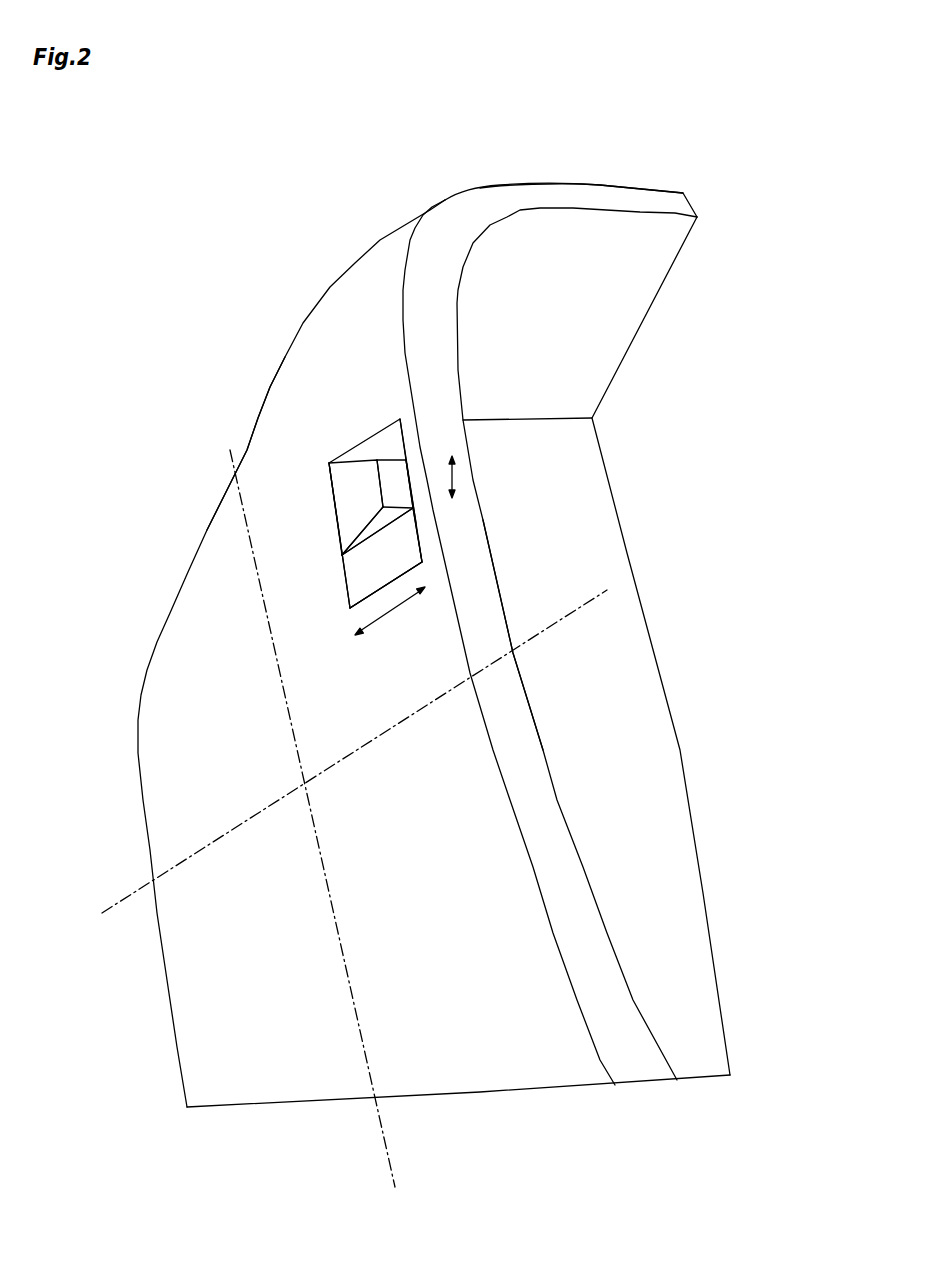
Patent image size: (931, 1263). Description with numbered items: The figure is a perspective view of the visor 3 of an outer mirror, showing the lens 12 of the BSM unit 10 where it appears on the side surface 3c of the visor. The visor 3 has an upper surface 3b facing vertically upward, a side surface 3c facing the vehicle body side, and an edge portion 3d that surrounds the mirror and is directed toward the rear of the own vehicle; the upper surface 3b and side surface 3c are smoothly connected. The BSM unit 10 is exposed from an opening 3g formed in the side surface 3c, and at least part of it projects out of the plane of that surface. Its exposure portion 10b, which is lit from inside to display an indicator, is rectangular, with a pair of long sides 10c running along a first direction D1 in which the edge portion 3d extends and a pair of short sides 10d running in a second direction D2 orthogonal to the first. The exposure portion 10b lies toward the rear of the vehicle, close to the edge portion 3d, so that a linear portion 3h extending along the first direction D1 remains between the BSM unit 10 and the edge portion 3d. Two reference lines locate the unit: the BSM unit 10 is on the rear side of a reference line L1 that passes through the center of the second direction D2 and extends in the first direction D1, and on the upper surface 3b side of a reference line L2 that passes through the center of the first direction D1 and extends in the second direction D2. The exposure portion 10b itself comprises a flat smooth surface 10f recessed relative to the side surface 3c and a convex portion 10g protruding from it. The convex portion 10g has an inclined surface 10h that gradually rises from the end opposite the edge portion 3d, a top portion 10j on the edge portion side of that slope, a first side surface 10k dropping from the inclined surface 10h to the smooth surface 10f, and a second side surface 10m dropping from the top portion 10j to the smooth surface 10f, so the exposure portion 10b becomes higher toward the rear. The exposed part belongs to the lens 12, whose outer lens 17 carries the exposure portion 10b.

The visor 3 is at (450, 194).
The upper surface 3b is at (633, 188).
The side surface 3c is at (263, 440).
The edge portion 3d is at (483, 583).
The opening 3g is at (330, 466).
The linear portion 3h is at (420, 467).
The BSM unit 10 is at (363, 432).
The exposure portion 10b is at (393, 458).
The long sides 10c is at (351, 605).
The short sides 10d is at (377, 460).
The smooth surface 10f is at (422, 560).
The convex portion 10g is at (412, 493).
The inclined surface 10h is at (334, 493).
The top portion 10j is at (380, 496).
The first side surface 10k is at (383, 508).
The second side surface 10m is at (416, 523).
The lens 12 is at (344, 566).
The outer lens 17 is at (224, 576).
The first direction D1 is at (457, 477).
The second direction D2 is at (372, 618).
The reference line L1 is at (383, 1137).
The reference line L2 is at (122, 903).